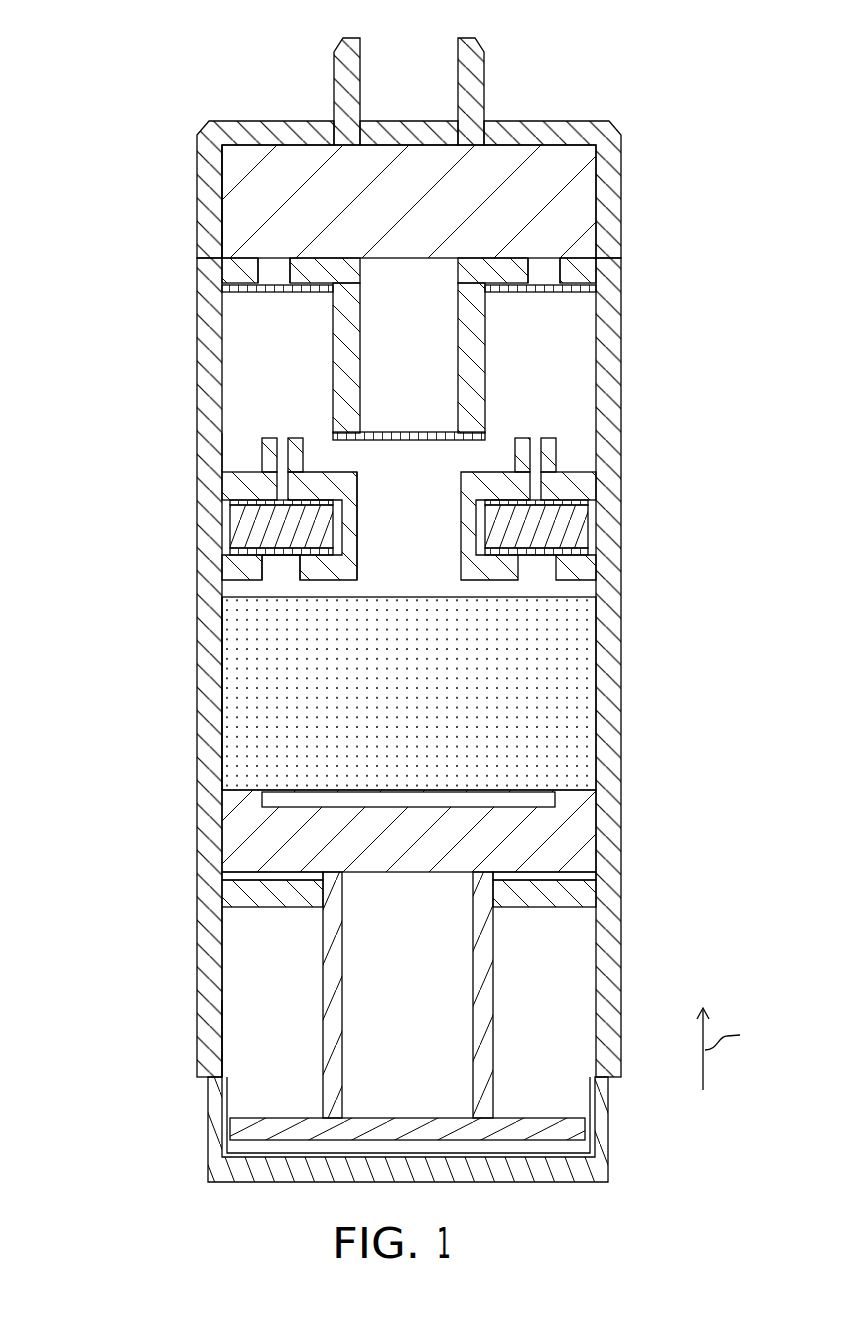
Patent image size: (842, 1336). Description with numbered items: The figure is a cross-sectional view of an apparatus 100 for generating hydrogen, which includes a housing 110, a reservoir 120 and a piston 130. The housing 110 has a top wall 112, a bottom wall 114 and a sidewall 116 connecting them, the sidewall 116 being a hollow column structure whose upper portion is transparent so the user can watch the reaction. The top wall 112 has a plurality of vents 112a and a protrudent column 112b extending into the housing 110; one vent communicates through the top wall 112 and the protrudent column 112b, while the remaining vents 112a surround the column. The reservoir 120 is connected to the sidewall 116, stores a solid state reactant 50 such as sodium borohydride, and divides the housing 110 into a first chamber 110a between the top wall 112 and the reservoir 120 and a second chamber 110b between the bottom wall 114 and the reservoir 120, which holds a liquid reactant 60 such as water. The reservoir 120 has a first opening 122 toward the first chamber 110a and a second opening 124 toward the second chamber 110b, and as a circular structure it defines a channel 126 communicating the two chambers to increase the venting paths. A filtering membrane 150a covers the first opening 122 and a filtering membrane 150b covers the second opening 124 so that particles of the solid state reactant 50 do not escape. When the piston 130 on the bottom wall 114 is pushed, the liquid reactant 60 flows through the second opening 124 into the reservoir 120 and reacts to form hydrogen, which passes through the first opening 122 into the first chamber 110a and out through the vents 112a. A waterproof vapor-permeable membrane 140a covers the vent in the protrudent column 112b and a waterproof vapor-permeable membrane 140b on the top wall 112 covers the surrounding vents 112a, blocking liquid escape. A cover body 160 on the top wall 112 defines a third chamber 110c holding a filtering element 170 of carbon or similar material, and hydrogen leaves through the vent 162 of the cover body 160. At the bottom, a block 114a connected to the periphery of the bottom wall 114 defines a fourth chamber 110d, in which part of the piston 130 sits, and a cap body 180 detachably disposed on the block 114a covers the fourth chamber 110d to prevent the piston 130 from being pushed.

The apparatus for generating hydrogen 100 is at (399, 626).
The housing 110 is at (366, 568).
The first chamber 110a is at (231, 433).
The second chamber 110b is at (231, 673).
The third chamber 110c is at (231, 182).
The fourth chamber 110d is at (232, 1033).
The top wall 112 is at (250, 270).
The vents 112a is at (369, 307).
The protrudent column 112b is at (338, 353).
The bottom wall 114 is at (267, 893).
The block 114a is at (203, 1042).
The sidewall 116 is at (207, 660).
The reservoir 120 is at (412, 526).
The first opening 122 is at (293, 466).
The second opening 124 is at (274, 566).
The channel 126 is at (366, 526).
The piston 130 is at (330, 1022).
The waterproof vapor-permeable membrane 140a is at (453, 442).
The waterproof vapor-permeable membrane 140b is at (275, 293).
The filtering membrane 150a is at (232, 503).
The filtering membrane 150b is at (235, 550).
The solid state reactant 50 is at (243, 533).
The liquid reactant 60 is at (233, 753).
The cover body 160 is at (612, 142).
The vent 162 is at (362, 57).
The filtering element 170 is at (583, 200).
The cap body 180 is at (284, 1175).